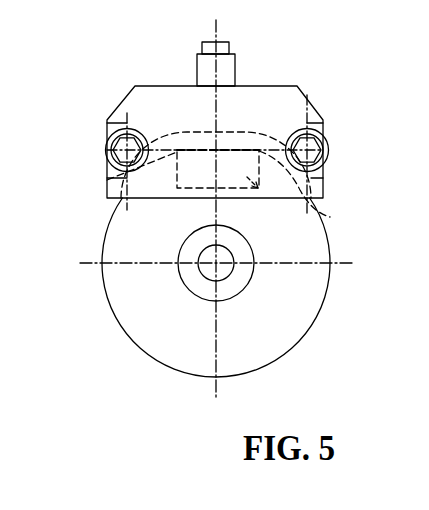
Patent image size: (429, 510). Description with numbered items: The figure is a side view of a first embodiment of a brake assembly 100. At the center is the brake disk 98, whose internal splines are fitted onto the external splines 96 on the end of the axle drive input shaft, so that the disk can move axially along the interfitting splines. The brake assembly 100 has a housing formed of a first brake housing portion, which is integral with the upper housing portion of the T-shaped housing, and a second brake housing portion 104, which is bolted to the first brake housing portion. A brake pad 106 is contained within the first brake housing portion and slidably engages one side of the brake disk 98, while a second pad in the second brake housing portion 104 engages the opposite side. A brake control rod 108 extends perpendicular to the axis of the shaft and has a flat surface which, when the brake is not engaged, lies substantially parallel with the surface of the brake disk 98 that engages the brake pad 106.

The brake assembly 100 is at (116, 67).
The second brake housing portion 104 is at (299, 90).
The brake pad 106 is at (330, 217).
The brake control rod 108 is at (235, 70).
The external splines 96 is at (235, 275).
The brake disk 98 is at (240, 305).